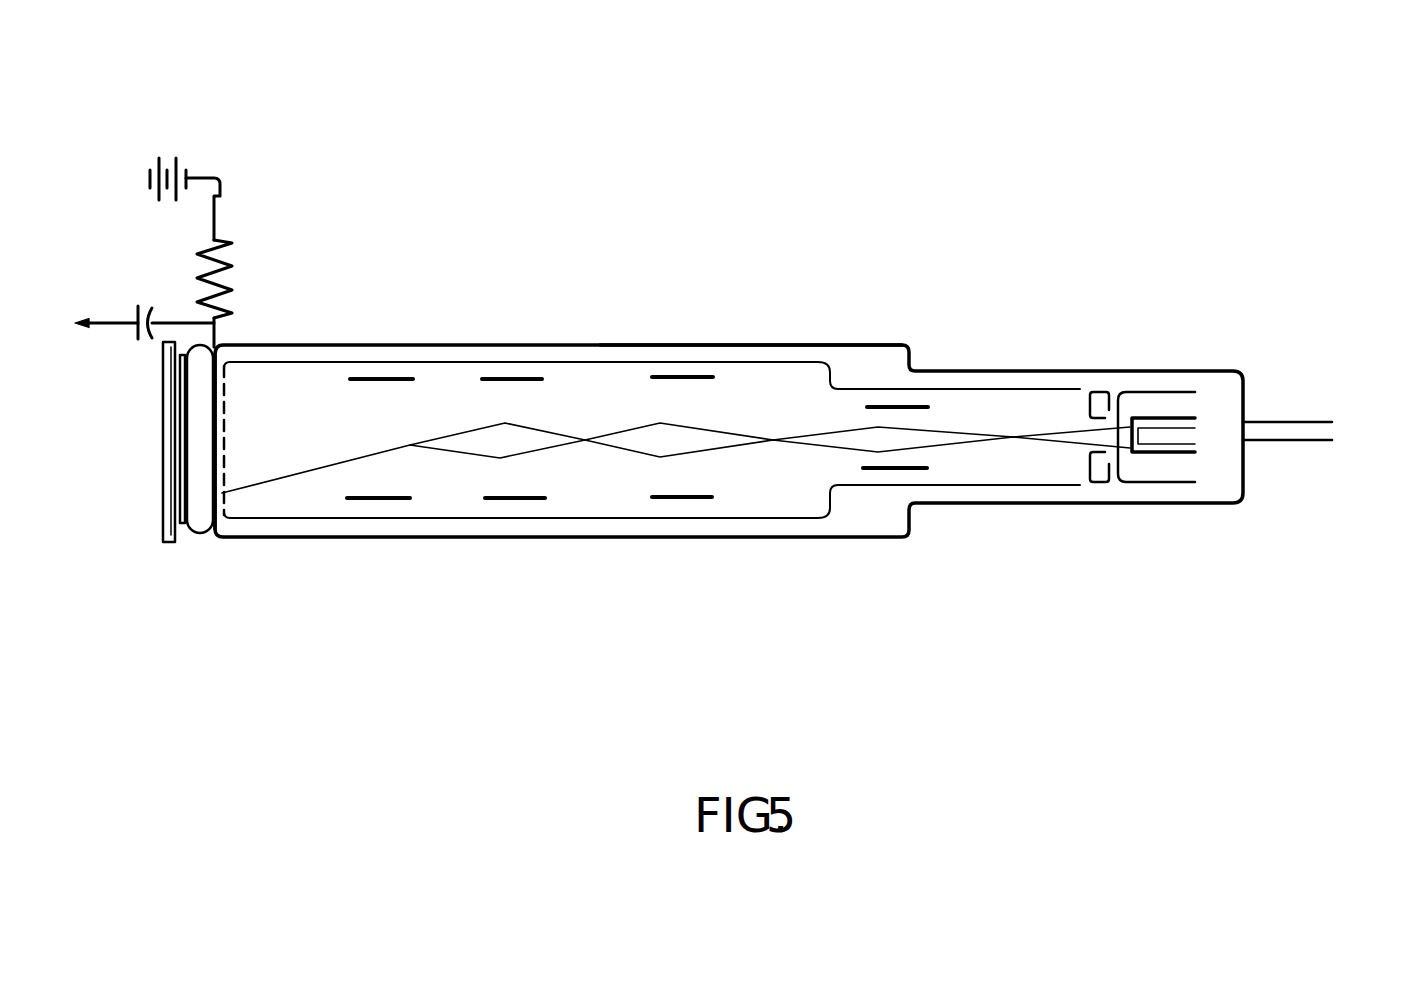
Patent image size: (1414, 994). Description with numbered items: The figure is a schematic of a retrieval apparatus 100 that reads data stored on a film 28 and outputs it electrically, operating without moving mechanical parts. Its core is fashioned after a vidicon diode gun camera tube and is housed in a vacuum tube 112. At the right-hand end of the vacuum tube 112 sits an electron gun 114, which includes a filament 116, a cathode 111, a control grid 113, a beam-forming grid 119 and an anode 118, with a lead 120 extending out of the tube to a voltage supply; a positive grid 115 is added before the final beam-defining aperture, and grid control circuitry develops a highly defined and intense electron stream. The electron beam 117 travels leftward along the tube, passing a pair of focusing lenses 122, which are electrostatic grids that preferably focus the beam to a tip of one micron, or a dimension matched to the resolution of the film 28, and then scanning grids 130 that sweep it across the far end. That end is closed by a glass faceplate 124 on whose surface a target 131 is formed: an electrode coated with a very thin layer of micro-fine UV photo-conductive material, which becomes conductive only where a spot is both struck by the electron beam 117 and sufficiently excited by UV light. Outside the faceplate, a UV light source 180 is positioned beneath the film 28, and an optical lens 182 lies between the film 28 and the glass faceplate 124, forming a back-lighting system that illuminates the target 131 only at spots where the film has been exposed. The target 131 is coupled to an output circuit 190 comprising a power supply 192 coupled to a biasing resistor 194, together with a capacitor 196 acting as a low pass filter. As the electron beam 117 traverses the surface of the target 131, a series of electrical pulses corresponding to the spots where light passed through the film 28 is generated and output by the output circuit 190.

The retrieval apparatus 100 is at (994, 172).
The cathode 111 is at (1150, 418).
The vacuum tube 112 is at (825, 537).
The control grid 113 is at (1145, 482).
The electron gun 114 is at (1235, 571).
The positive grid 115 is at (1094, 392).
The filament 116 is at (1183, 443).
The electron beam 117 is at (770, 273).
The anode 118 is at (907, 407).
The beam-forming grid 119 is at (802, 345).
The lead 120 is at (1333, 418).
The focusing lenses 122 is at (520, 379).
The glass faceplate 124 is at (218, 522).
The scanning grids 130 is at (382, 379).
The target 131 is at (228, 400).
The UV light source 180 is at (170, 542).
The optical lens 182 is at (200, 520).
The film 28 is at (182, 525).
The output circuit 190 is at (246, 242).
The power supply 192 is at (184, 150).
The biasing resistor 194 is at (233, 240).
The capacitor 196 is at (142, 305).